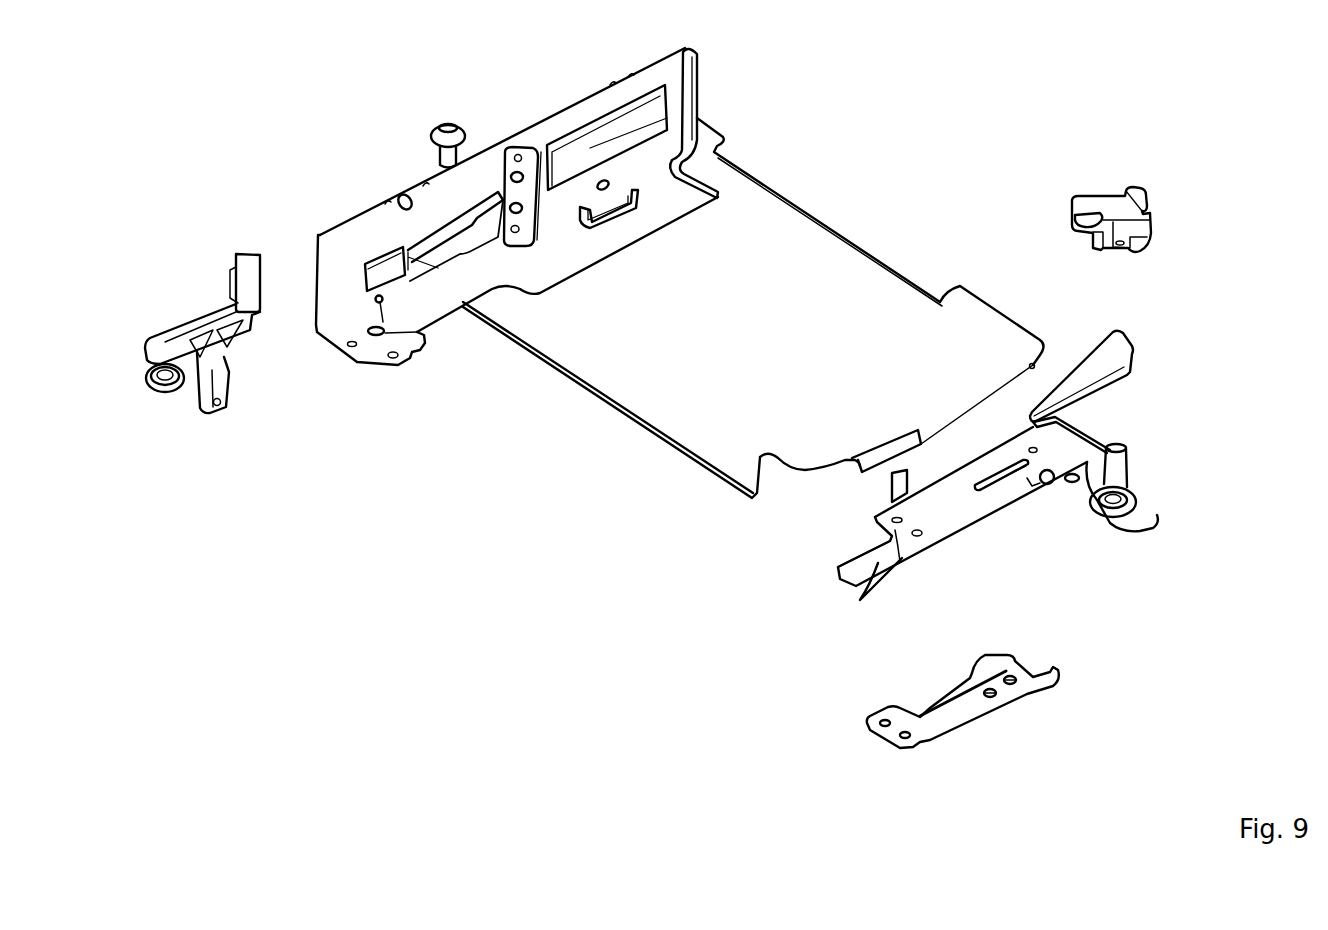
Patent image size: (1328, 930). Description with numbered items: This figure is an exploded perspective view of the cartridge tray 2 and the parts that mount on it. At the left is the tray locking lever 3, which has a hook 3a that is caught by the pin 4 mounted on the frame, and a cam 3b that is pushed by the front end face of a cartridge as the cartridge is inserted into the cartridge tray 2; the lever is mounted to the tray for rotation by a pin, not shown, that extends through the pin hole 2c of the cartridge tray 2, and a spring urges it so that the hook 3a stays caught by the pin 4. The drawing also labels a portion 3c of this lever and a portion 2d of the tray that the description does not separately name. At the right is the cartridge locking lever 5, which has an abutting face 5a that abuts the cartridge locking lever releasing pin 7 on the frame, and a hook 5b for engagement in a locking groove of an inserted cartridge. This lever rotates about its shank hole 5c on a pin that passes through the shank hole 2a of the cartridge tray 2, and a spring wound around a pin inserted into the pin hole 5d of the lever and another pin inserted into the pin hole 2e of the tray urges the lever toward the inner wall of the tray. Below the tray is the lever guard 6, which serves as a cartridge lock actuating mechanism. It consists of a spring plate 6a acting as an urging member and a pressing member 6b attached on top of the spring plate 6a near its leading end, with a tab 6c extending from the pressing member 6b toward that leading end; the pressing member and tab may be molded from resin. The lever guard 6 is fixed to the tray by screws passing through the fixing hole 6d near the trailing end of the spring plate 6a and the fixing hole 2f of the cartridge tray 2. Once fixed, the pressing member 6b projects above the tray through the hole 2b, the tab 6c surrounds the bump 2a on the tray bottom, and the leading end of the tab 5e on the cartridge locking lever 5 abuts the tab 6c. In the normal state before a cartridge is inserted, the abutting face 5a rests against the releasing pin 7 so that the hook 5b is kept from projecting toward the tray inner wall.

The cartridge tray 2 is at (755, 342).
The shank hole 2a is at (1047, 485).
The hole 2b is at (993, 489).
The pin hole 2c is at (383, 322).
The bent flange 2d is at (1140, 531).
The pin hole 2e is at (1068, 446).
The fixing hole 2f is at (862, 600).
The tray locking lever 3 is at (192, 313).
The hook 3a is at (248, 262).
The cam 3b is at (233, 383).
The lever boss 3c is at (163, 383).
The pin 4 is at (450, 125).
The cartridge locking lever 5 is at (1118, 206).
The abutting face 5a is at (1152, 220).
The hook 5b is at (1145, 193).
The shank hole 5c is at (1075, 216).
The pin hole 5d is at (1125, 250).
The tab 5e is at (1093, 240).
The lever guard 6 is at (986, 719).
The spring plate 6a is at (972, 711).
The pressing member 6b is at (990, 660).
The tab 6c is at (1058, 672).
The fixing hole 6d is at (885, 728).
The cartridge locking lever releasing pin 7 is at (1130, 470).